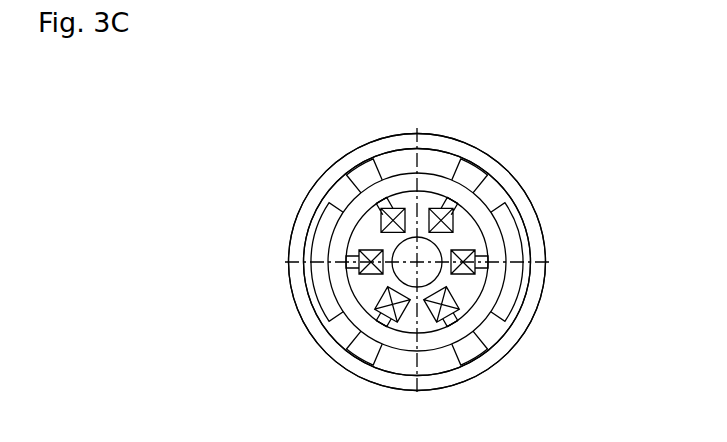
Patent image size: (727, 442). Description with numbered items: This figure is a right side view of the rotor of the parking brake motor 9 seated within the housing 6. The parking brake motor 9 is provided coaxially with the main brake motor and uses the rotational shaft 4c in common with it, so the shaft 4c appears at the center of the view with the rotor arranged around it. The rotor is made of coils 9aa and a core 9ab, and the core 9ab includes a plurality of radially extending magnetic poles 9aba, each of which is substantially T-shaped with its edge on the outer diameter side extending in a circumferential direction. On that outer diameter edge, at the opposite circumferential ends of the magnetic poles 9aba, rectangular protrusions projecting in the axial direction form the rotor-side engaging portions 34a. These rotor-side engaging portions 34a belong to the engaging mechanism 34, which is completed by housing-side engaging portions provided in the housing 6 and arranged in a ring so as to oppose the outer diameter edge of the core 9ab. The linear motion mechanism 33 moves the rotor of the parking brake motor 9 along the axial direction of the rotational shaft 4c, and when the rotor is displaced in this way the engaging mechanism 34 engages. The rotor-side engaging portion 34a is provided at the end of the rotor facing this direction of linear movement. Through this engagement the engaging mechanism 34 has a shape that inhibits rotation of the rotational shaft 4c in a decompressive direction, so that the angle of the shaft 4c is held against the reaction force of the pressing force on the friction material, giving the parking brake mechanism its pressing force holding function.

The housing 6 is at (390, 134).
The parking brake motor 9 is at (419, 258).
The coils 9aa is at (456, 220).
The core 9ab is at (354, 242).
The magnetic poles 9aba is at (385, 198).
The linear motion mechanism 33 is at (468, 156).
The rotational shaft 4c is at (471, 303).
The engaging mechanism 34 is at (392, 268).
The rotor-side engaging portion 34a is at (381, 210).